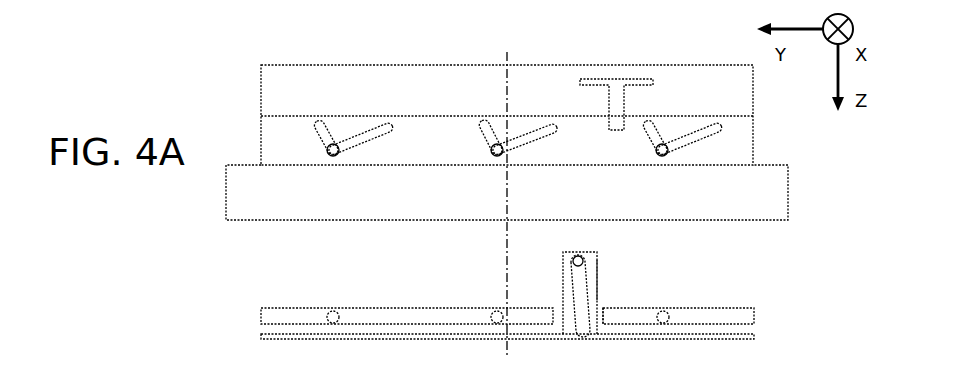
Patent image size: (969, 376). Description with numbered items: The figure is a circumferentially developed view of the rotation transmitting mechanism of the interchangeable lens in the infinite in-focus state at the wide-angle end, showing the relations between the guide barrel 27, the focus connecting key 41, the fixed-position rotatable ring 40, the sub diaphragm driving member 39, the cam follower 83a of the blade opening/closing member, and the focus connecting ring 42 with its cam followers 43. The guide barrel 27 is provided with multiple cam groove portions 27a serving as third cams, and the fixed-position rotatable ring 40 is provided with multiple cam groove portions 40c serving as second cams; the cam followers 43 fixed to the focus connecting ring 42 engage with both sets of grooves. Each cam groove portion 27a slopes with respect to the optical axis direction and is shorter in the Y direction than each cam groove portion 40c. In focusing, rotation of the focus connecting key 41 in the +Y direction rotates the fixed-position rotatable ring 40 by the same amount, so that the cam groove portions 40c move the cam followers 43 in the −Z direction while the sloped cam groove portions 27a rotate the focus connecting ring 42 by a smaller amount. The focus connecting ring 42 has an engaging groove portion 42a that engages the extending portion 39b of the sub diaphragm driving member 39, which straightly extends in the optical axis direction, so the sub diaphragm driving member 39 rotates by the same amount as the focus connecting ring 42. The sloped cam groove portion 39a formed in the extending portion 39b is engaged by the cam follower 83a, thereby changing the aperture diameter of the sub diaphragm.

The guide barrel 27 is at (738, 103).
The cam groove portions 27a is at (321, 130).
The sub diaphragm driving member 39 is at (298, 335).
The cam groove portion 39a is at (582, 297).
The extending portion 39b is at (622, 277).
The fixed-position rotatable ring 40 is at (445, 130).
The cam groove portions 40c is at (370, 130).
The focus connecting key 41 is at (614, 80).
The focus connecting ring 42 is at (418, 312).
The engaging groove portion 42a is at (603, 314).
The cam followers 43 is at (338, 155).
The cam follower 83a is at (578, 256).